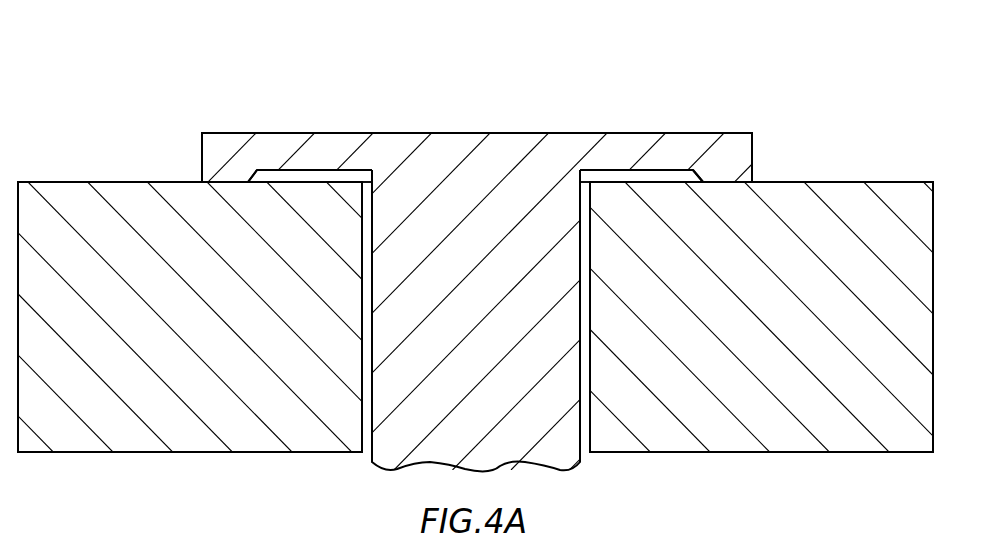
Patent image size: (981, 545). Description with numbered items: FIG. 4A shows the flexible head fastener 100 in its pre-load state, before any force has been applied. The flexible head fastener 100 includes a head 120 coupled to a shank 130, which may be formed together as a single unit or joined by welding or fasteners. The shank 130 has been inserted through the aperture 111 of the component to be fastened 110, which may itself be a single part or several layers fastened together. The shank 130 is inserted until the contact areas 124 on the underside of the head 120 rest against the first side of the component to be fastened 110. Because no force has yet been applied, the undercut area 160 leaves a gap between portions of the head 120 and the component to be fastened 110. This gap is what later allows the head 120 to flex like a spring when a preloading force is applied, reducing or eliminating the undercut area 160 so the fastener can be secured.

The flexible head fastener 100 is at (150, 65).
The component to be fastened 110 is at (798, 440).
The aperture 111 is at (587, 425).
The head 120 is at (217, 155).
The contact area 124 is at (230, 183).
The shank 130 is at (420, 353).
The undercut area 160 is at (298, 177).